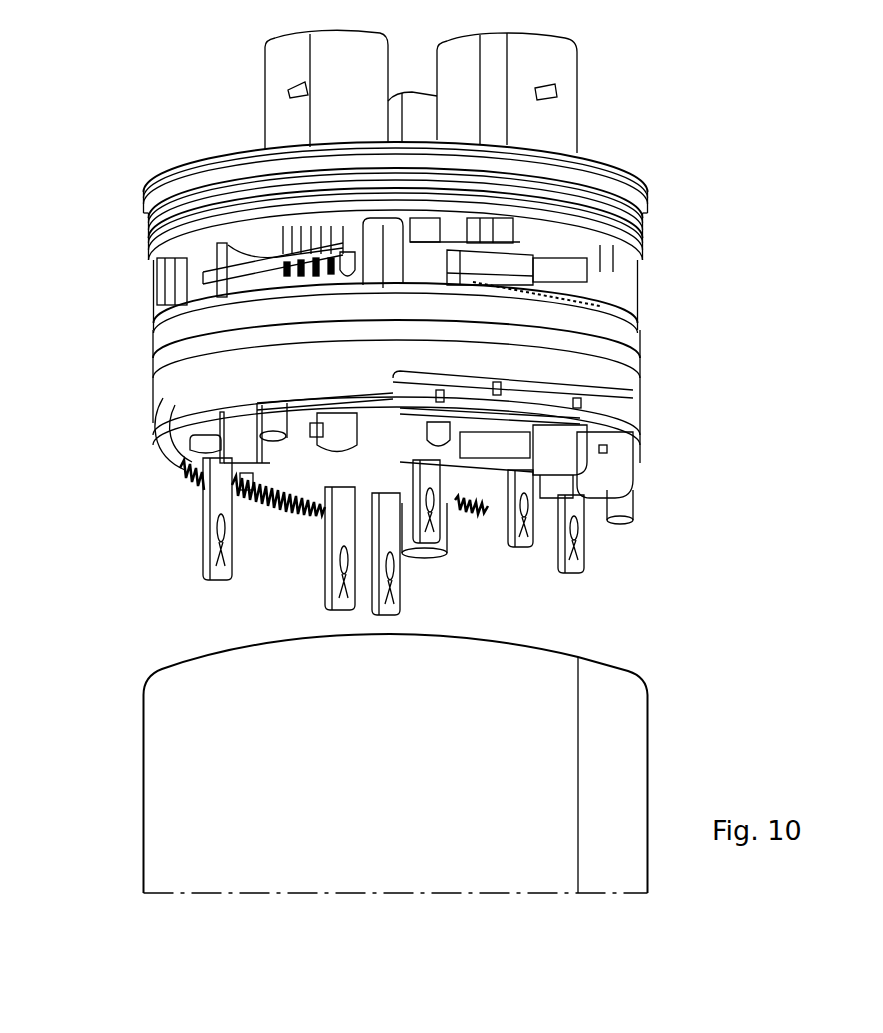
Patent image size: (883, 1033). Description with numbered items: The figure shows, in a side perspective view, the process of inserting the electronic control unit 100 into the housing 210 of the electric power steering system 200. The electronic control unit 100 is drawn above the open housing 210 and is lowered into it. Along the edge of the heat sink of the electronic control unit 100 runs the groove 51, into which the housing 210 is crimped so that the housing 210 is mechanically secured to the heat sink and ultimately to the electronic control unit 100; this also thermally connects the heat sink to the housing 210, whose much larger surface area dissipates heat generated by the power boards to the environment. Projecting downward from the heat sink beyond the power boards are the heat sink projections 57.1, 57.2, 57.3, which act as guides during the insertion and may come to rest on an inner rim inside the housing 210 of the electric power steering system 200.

The electronic control unit 100 is at (622, 139).
The groove 51 is at (620, 370).
The heat sink projection 57.1 is at (230, 455).
The heat sink projection 57.2 is at (447, 553).
The heat sink projection 57.3 is at (633, 495).
The electric power steering system 200 is at (674, 671).
The housing 210 is at (648, 740).